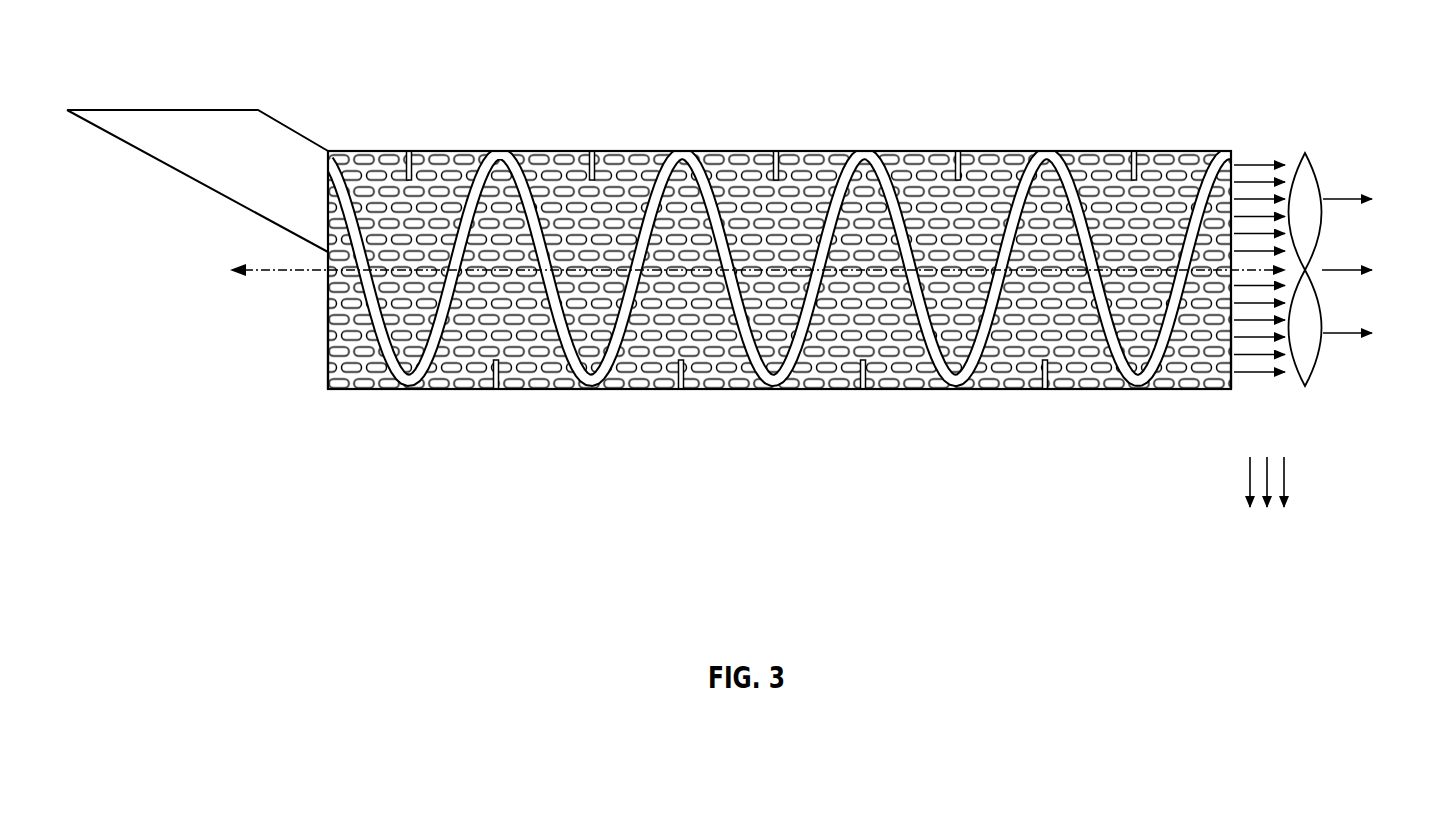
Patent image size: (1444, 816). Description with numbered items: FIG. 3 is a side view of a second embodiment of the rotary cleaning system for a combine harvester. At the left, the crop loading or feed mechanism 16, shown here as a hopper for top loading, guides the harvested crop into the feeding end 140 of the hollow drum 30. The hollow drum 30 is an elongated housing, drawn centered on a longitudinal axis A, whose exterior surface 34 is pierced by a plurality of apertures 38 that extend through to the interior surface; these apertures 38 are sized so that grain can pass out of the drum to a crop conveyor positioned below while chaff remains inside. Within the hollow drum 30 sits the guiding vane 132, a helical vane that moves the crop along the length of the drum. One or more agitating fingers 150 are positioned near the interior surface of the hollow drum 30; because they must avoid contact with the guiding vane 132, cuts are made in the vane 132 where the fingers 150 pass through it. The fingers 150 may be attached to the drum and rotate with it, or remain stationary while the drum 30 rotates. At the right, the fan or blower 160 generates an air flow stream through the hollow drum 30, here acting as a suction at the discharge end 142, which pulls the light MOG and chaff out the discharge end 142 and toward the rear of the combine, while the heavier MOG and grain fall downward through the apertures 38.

The crop loading or feed mechanism 16 is at (163, 110).
The hollow drum 30 is at (1131, 150).
The exterior surface 34 is at (1207, 390).
The plurality of apertures 38 is at (545, 175).
The guiding vane 132 is at (968, 389).
The first end 140 is at (328, 389).
The second end 142 is at (1233, 389).
The agitating fingers 150 is at (778, 150).
The fan or blower 160 is at (1305, 153).
The longitudinal axis A is at (267, 272).